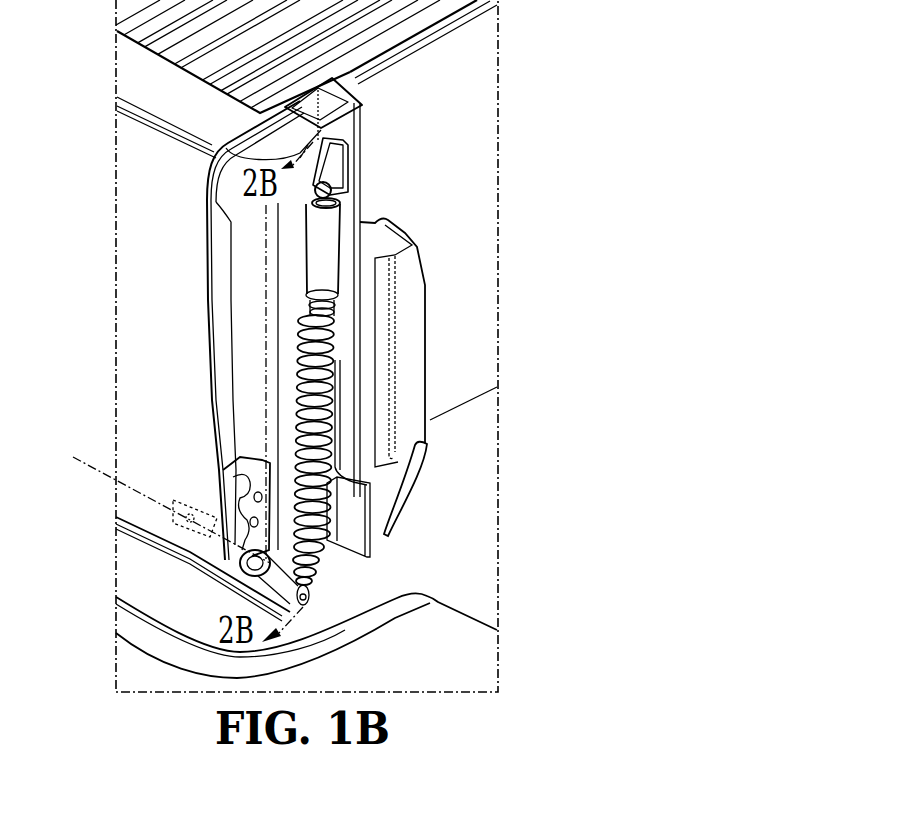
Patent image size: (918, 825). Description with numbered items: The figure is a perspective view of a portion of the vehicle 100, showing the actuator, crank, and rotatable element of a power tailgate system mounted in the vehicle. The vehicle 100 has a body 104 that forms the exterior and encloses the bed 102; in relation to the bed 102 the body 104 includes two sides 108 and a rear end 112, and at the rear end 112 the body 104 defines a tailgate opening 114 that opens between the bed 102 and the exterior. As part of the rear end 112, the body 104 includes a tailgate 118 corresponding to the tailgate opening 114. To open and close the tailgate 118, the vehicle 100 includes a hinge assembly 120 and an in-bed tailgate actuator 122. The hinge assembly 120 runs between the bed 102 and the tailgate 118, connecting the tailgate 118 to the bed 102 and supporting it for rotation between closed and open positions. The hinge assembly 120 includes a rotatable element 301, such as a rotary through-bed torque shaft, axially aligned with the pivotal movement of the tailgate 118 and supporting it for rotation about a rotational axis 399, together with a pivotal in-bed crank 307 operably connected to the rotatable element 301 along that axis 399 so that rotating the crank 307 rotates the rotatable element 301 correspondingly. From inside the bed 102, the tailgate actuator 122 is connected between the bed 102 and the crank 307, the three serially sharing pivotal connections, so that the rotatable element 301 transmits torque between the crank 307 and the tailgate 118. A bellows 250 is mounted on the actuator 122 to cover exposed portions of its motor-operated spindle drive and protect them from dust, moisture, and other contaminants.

The vehicle 100 is at (505, 38).
The body 104 is at (505, 71).
The bed 102 is at (457, 128).
The sides 108 is at (457, 163).
The rear end 112 is at (228, 217).
The tailgate opening 114 is at (210, 274).
The tailgate 118 is at (173, 342).
The hinge assembly 120 is at (300, 513).
The in-bed tailgate actuator 122 is at (336, 241).
The bellows 250 is at (313, 378).
The rotatable element 301 is at (300, 590).
The pivotal in-bed crank 307 is at (300, 605).
The rotatable element rotational axis 399 is at (90, 473).